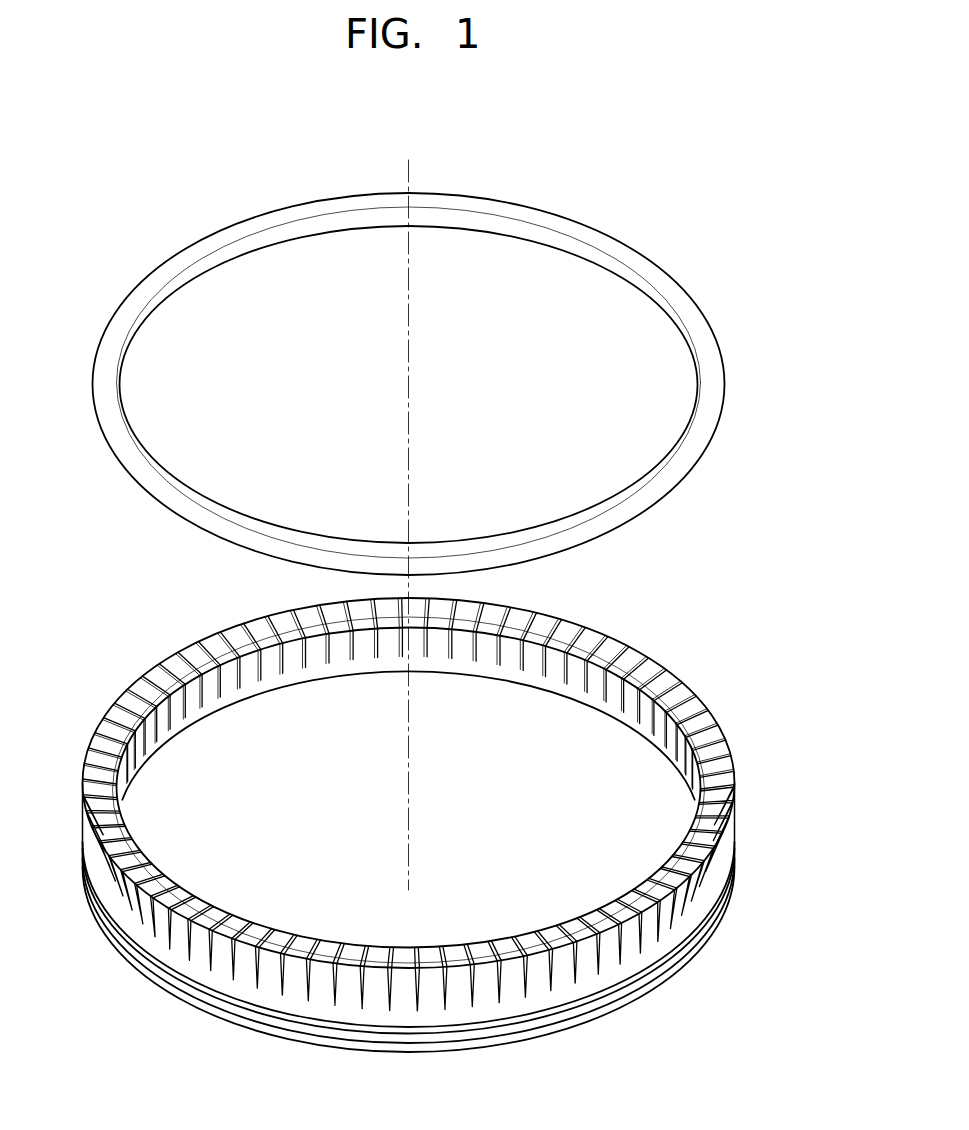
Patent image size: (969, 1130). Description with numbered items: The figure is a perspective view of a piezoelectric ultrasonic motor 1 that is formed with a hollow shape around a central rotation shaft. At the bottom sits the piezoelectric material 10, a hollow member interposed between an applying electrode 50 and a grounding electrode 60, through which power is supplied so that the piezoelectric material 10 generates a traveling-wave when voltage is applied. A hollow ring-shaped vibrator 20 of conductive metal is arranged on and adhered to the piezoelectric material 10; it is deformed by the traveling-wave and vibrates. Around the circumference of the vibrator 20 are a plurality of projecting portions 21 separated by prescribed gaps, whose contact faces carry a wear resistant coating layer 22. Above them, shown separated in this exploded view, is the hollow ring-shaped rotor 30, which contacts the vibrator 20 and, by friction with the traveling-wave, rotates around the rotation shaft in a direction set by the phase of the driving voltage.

The piezoelectric ultrasonic motor 1 is at (688, 173).
The piezoelectric material 10 is at (407, 1037).
The vibrator 20 is at (699, 682).
The projecting portions 21 is at (155, 923).
The wear resistant coating layer 22 is at (215, 930).
The rotor 30 is at (693, 303).
The applying electrode 50 is at (365, 1028).
The grounding electrode 60 is at (462, 1043).